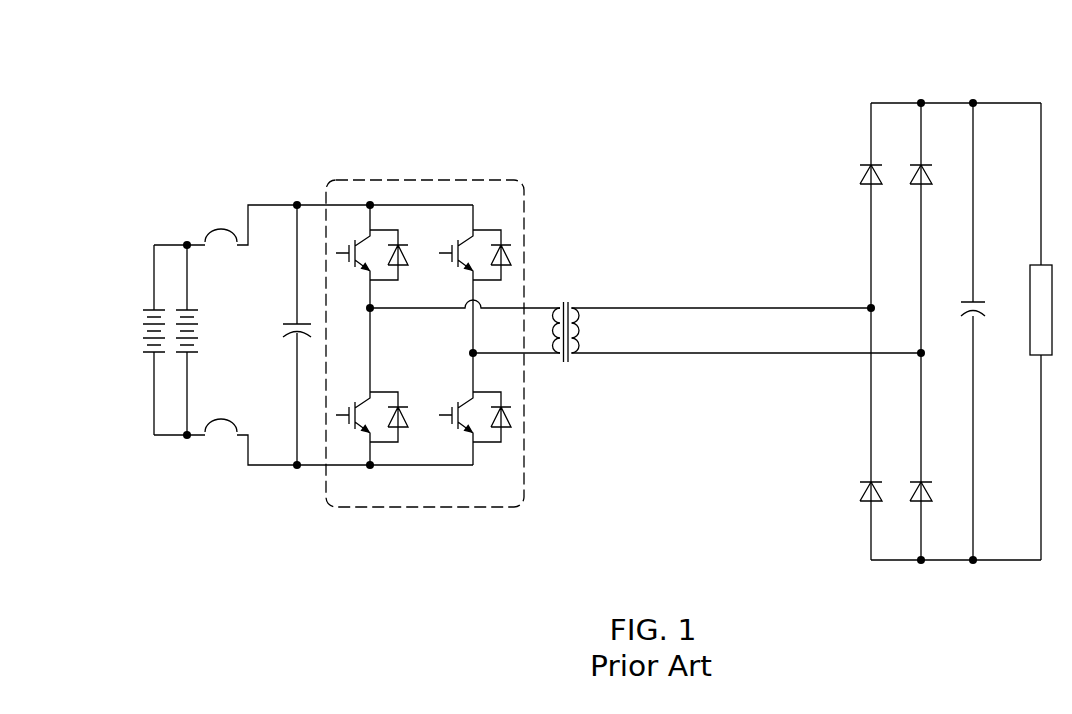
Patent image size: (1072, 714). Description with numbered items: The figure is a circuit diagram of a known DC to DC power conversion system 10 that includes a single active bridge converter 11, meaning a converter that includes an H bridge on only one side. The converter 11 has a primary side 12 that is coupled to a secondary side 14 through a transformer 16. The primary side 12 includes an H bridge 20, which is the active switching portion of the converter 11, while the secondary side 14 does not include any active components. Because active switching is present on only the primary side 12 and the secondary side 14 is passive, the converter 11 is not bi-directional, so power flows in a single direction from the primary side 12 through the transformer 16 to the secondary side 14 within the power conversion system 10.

The power conversion system 10 is at (617, 78).
The single active bridge converter 11 is at (583, 216).
The primary side 12 is at (313, 204).
The secondary side 14 is at (950, 103).
The transformer 16 is at (566, 302).
The H bridge 20 is at (490, 180).